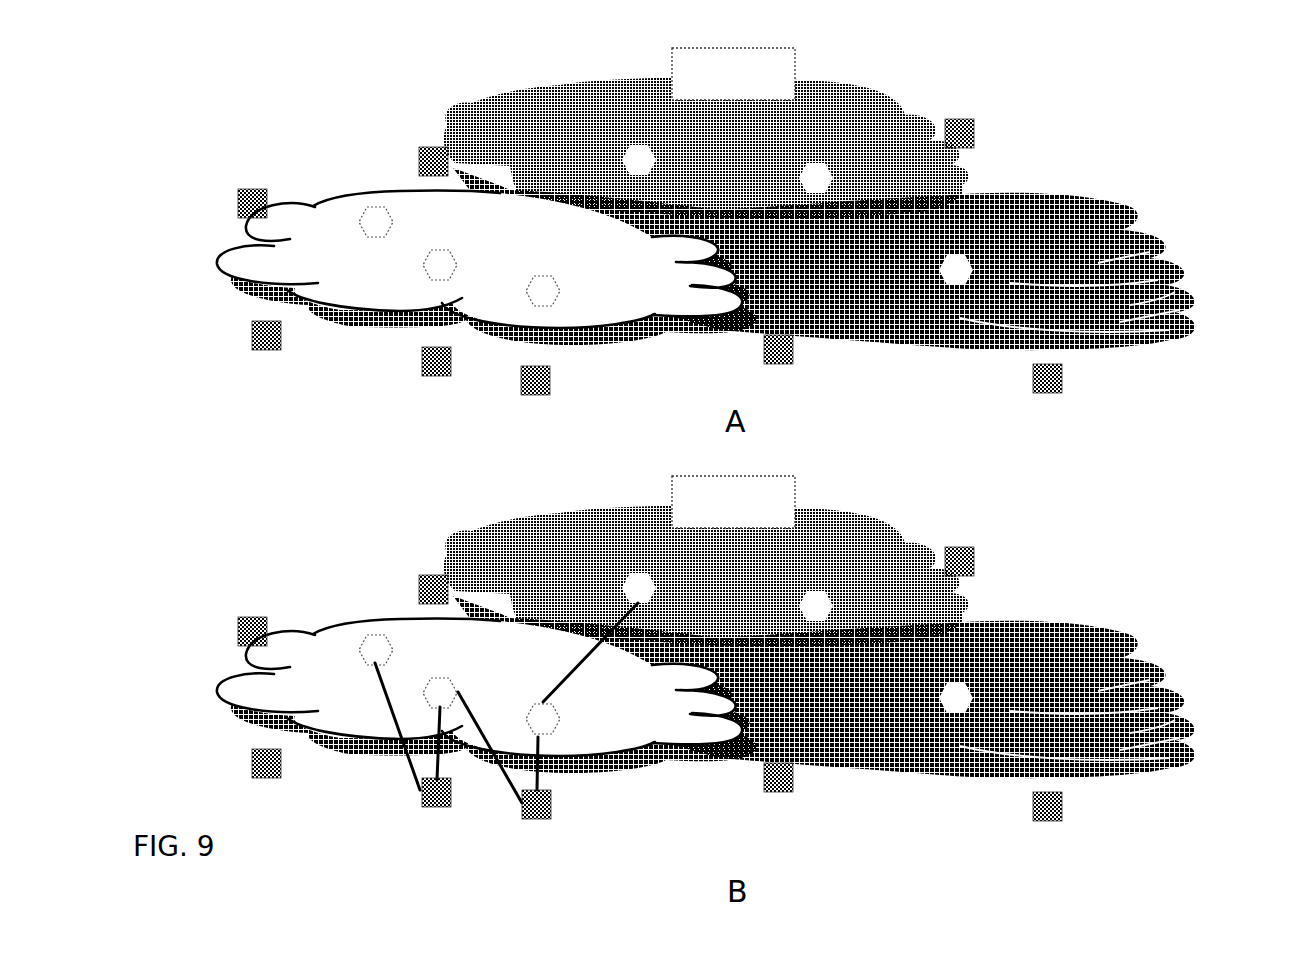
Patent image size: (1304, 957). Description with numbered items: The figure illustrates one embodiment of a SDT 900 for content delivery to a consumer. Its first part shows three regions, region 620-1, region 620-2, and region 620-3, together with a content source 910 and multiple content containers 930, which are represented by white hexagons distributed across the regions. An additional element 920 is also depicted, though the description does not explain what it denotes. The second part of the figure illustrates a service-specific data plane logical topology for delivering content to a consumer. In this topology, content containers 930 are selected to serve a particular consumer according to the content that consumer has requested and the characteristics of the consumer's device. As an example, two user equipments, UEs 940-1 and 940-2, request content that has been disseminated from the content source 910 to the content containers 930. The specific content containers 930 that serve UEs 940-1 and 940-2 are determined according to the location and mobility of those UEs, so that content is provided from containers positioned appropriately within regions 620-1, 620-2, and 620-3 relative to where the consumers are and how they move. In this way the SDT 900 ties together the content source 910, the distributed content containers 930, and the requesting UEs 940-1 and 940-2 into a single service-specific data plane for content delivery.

The SDT 900 is at (200, 104).
The region 620-1 is at (508, 105).
The region 620-2 is at (218, 262).
The region 620-3 is at (1187, 332).
The content source 910 is at (722, 97).
The terminal 920 is at (250, 333).
The content containers 930 is at (362, 212).
The UE 940-1 is at (443, 808).
The UE 940-2 is at (545, 820).